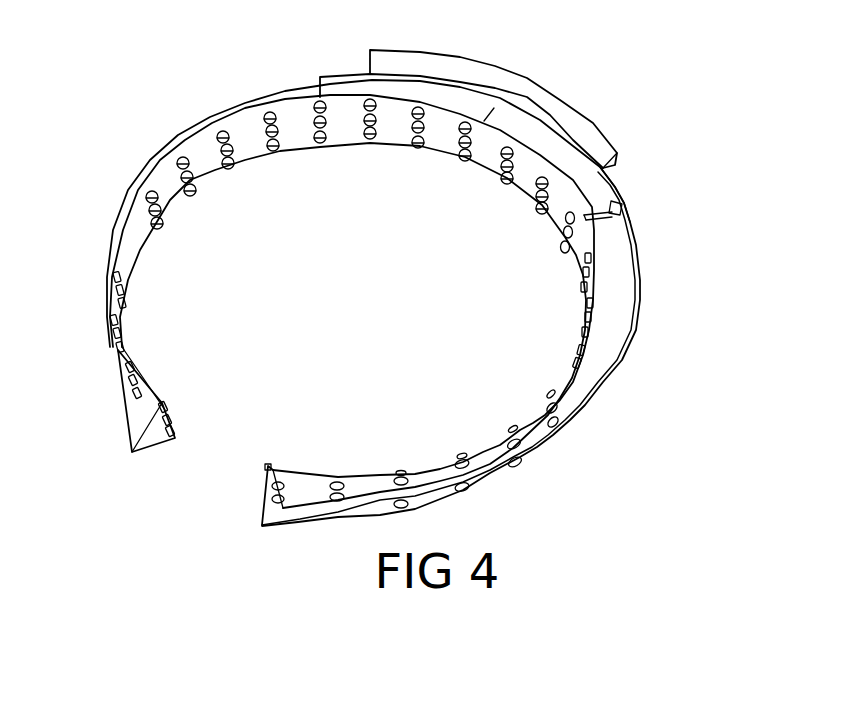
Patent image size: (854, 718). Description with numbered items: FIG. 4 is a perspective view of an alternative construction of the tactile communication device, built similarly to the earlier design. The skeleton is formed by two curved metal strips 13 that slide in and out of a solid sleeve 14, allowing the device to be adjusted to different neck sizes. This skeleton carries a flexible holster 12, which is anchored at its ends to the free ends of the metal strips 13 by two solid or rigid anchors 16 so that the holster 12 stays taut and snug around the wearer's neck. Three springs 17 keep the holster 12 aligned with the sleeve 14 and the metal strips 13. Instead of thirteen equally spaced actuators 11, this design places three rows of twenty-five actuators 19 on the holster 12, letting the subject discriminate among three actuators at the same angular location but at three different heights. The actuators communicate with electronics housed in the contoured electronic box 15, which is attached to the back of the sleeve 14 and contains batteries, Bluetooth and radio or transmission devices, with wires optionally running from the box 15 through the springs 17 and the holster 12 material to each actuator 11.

The actuators 11 is at (323, 143).
The holster 12 is at (170, 226).
The curved metal strips 13 is at (228, 117).
The sleeve 14 is at (617, 183).
The contoured electronic box 15 is at (572, 92).
The anchors 16 is at (150, 457).
The springs 17 is at (610, 217).
The actuators 19 is at (272, 147).